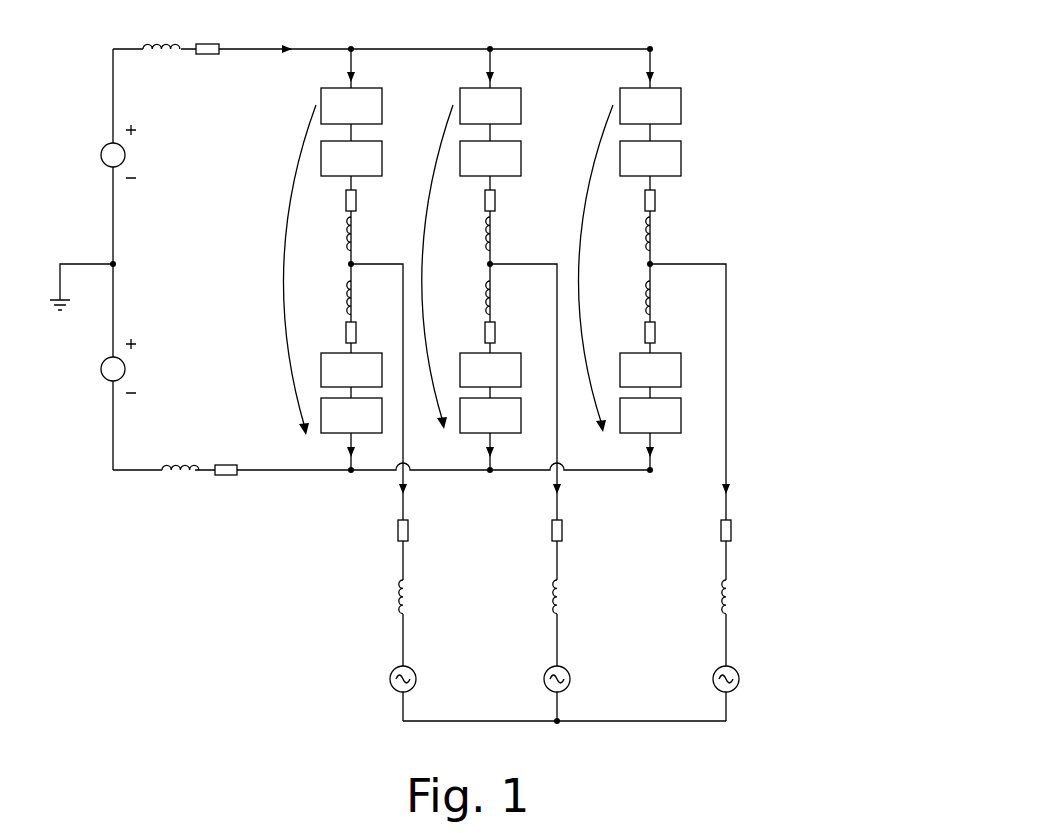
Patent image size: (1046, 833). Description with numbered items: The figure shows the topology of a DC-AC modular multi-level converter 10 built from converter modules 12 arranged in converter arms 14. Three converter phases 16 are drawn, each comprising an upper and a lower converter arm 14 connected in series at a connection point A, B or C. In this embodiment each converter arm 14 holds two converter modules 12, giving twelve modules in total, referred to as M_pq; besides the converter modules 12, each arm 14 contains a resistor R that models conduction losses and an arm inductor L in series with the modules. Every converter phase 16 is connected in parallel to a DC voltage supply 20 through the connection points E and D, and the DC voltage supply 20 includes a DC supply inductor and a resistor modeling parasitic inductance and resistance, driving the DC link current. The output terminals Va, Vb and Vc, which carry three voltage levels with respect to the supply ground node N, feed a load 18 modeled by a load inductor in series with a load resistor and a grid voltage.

The modular multi-level converter 10 is at (837, 50).
The converter module 12 is at (547, 273).
The converter arm 14 is at (267, 134).
The converter phase 16 is at (318, 502).
The load 18 is at (345, 520).
The DC voltage supply 20 is at (131, 522).